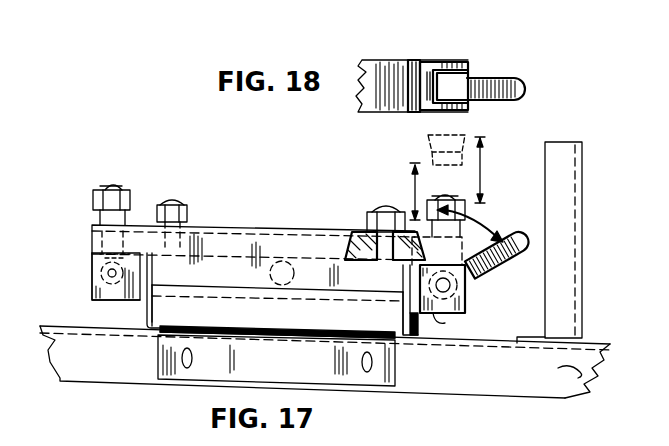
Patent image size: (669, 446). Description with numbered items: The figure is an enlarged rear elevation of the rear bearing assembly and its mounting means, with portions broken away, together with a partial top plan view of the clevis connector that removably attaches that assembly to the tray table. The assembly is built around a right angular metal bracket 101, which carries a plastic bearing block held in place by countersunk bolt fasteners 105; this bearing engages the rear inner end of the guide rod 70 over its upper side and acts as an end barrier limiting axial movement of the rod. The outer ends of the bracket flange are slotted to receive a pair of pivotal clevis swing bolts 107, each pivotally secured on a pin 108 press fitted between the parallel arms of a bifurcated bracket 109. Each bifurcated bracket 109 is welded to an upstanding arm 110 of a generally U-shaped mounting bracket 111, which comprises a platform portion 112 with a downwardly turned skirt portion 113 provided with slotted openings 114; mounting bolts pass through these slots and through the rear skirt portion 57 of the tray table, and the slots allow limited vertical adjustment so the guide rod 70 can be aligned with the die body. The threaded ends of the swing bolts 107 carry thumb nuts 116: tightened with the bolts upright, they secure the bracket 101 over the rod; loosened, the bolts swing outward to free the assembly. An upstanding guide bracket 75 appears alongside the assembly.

In FIG. 17, the rear skirt portion 57 is at (590, 374).
In FIG. 17, the guide rod 70 is at (270, 272).
In FIG. 17, the guide bracket 75 is at (586, 224).
In FIG. 17, the right angular metal bracket 101 is at (238, 226).
In FIG. 17, the countersunk bolt fastener 105 is at (183, 206).
In FIG. 18, the clevis swing bolt 107 is at (508, 74).
In FIG. 17, the clevis swing bolt 107 is at (100, 192).
In FIG. 17, the pin 108 is at (92, 265).
In FIG. 18, the bifurcated bracket 109 is at (437, 60).
In FIG. 17, the bifurcated bracket 109 is at (118, 300).
In FIG. 18, the upstanding arm 110 is at (410, 100).
In FIG. 17, the upstanding arm 110 is at (154, 302).
In FIG. 17, the U-shaped mounting bracket 111 is at (150, 352).
In FIG. 18, the platform portion 112 is at (380, 60).
In FIG. 17, the platform portion 112 is at (255, 326).
In FIG. 17, the skirt portion 113 is at (398, 365).
In FIG. 17, the slotted opening 114 is at (192, 358).
In FIG. 17, the thumb nut 116 is at (135, 200).